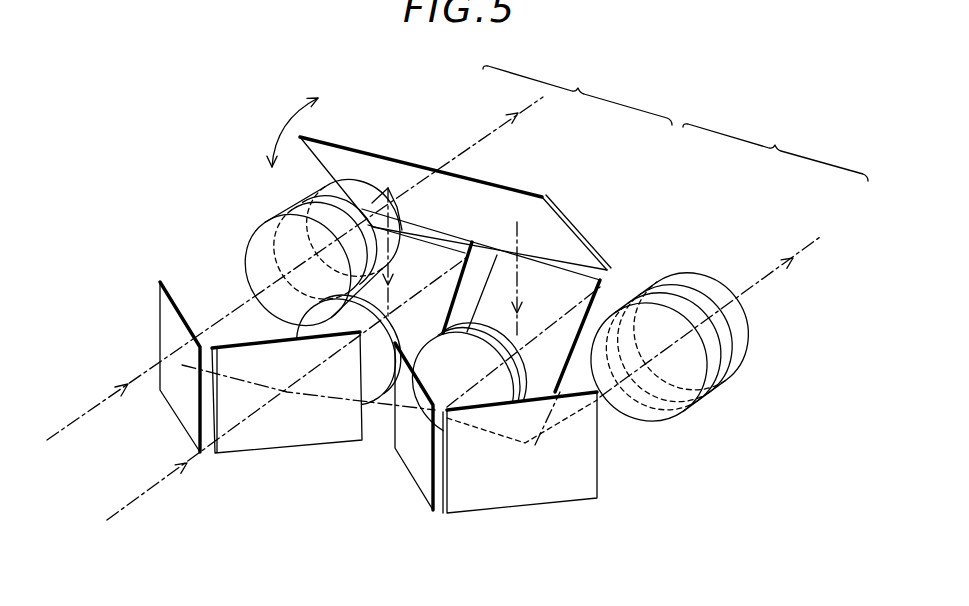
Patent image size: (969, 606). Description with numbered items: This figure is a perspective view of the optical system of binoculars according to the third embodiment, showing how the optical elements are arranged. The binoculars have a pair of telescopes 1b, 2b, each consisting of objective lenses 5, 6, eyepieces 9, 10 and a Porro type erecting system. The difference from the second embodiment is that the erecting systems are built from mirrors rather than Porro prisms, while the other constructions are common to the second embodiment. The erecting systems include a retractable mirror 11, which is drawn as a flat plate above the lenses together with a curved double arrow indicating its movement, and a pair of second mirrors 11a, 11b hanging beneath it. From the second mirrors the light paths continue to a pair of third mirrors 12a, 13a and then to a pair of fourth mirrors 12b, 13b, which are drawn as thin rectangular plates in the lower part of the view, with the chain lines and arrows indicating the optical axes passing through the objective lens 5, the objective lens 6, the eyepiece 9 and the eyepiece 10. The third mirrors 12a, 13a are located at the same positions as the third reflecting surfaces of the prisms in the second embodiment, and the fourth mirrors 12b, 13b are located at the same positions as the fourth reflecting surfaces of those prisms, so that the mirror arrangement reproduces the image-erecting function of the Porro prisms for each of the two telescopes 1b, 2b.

The telescope 1b is at (775, 150).
The telescope 2b is at (577, 93).
The objective lens 5 is at (525, 350).
The objective lens 6 is at (377, 417).
The eyepiece 9 is at (755, 338).
The eyepiece 10 is at (265, 212).
The retractable mirror 11 is at (363, 150).
The second mirror 11a is at (588, 258).
The second mirror 11b is at (472, 243).
The third mirror 12a is at (417, 493).
The fourth mirror 12b is at (538, 508).
The third mirror 13a is at (268, 450).
The fourth mirror 13b is at (180, 432).